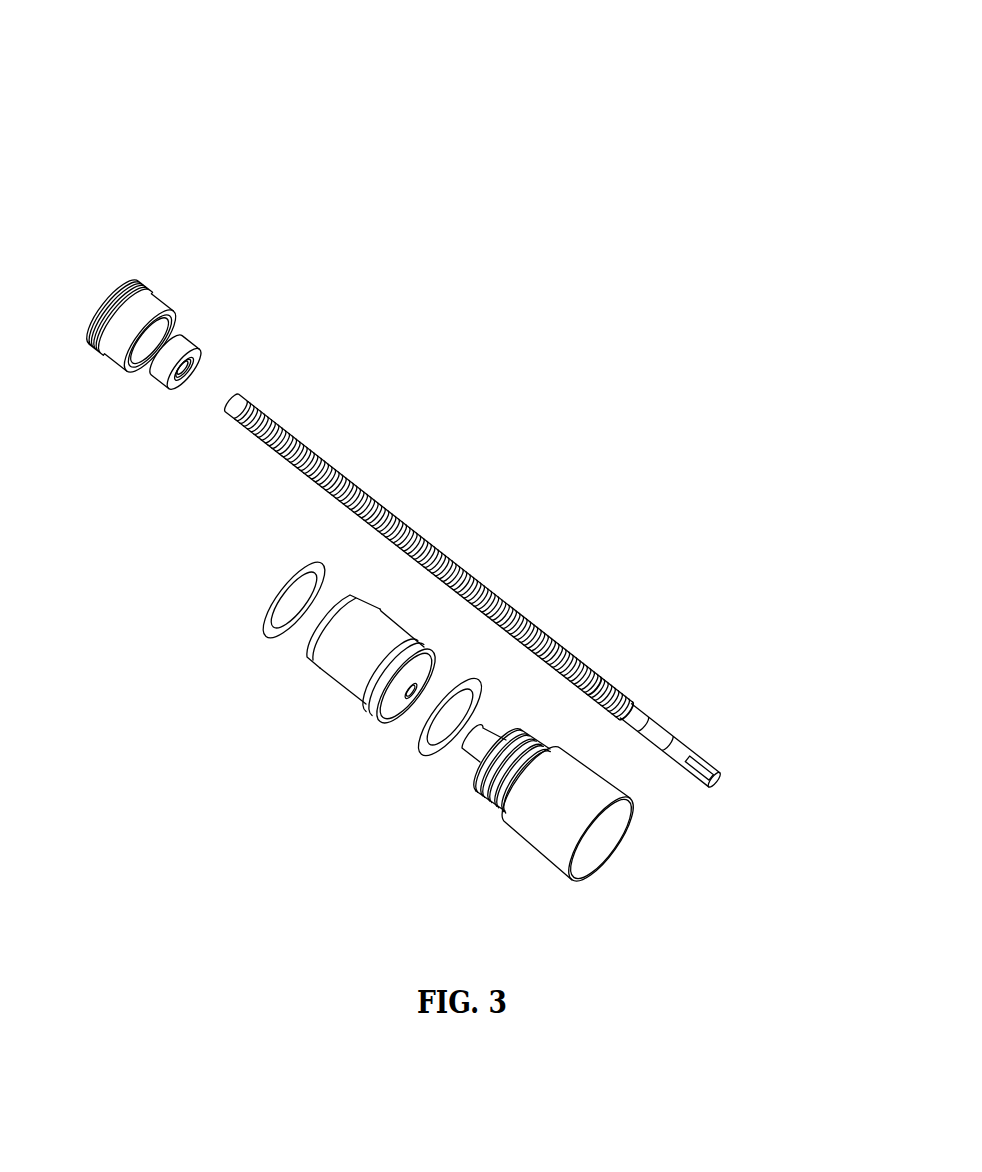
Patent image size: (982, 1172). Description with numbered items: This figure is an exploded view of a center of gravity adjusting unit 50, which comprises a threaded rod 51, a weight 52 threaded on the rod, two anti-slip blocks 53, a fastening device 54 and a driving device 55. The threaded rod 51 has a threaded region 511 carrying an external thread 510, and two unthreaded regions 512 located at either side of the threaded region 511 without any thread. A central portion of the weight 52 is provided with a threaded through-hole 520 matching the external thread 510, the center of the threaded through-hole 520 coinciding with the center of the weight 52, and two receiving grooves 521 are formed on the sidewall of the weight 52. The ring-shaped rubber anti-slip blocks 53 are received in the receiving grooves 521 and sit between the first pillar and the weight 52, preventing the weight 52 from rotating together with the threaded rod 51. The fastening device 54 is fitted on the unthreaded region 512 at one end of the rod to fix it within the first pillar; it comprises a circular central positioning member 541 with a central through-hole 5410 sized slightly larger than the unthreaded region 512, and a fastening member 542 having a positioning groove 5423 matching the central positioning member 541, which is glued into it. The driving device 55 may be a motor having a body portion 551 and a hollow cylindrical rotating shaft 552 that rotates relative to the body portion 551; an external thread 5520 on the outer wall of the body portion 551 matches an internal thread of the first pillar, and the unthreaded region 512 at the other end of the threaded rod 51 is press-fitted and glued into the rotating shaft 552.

The center of gravity adjusting unit 50 is at (428, 50).
The threaded rod 51 is at (545, 522).
The external thread 510 is at (513, 607).
The threaded region 511 is at (363, 490).
The unthreaded region 512 is at (232, 403).
The weight 52 is at (368, 672).
The threaded through-hole 520 is at (412, 691).
The receiving groove 521 is at (347, 637).
The anti-slip block 53 is at (282, 588).
The fastening device 54 is at (180, 246).
The central positioning member 541 is at (178, 342).
The through-hole 5410 is at (185, 357).
The fastening member 542 is at (143, 310).
The positioning groove 5423 is at (143, 350).
The driving device 55 is at (521, 883).
The body portion 551 is at (563, 808).
The rotating shaft 552 is at (486, 748).
The external thread 5520 is at (487, 795).